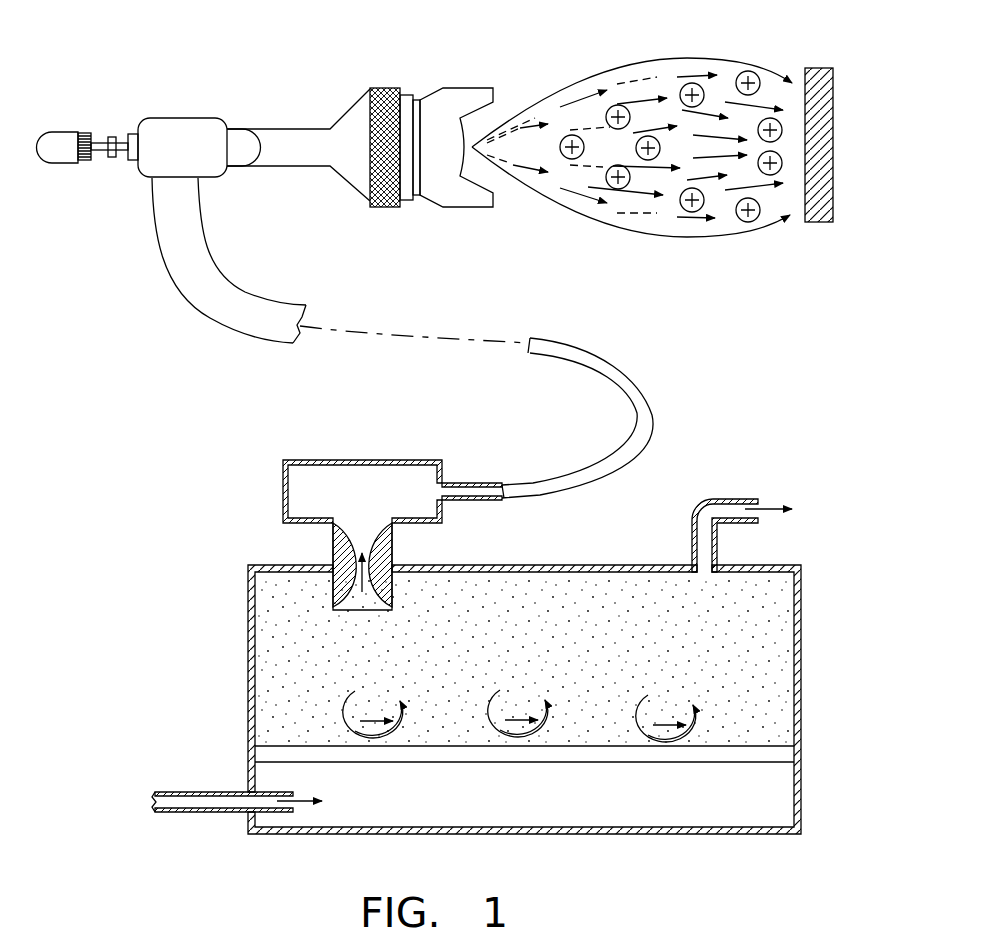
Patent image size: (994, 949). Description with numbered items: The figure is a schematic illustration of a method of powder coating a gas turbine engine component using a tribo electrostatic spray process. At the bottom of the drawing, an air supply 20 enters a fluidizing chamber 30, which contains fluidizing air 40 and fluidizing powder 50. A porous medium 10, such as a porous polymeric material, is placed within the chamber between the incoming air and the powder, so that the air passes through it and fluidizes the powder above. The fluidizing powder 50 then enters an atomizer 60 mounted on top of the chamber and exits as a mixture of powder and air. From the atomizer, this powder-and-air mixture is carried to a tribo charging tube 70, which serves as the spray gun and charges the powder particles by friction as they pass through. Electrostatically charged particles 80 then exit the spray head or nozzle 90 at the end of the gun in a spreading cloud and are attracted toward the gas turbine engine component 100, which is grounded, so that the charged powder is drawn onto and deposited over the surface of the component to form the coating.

The porous medium 10 is at (330, 753).
The air supply 20 is at (207, 791).
The fluidizing chamber 30 is at (607, 835).
The fluidizing air 40 is at (395, 735).
The fluidizing powder 50 is at (553, 655).
The atomizer 60 is at (375, 495).
The tribo charging tube 70 is at (177, 140).
The electrostatically charged particles 80 is at (574, 195).
The nozzle 90 is at (455, 98).
The gas turbine engine component 100 is at (822, 222).